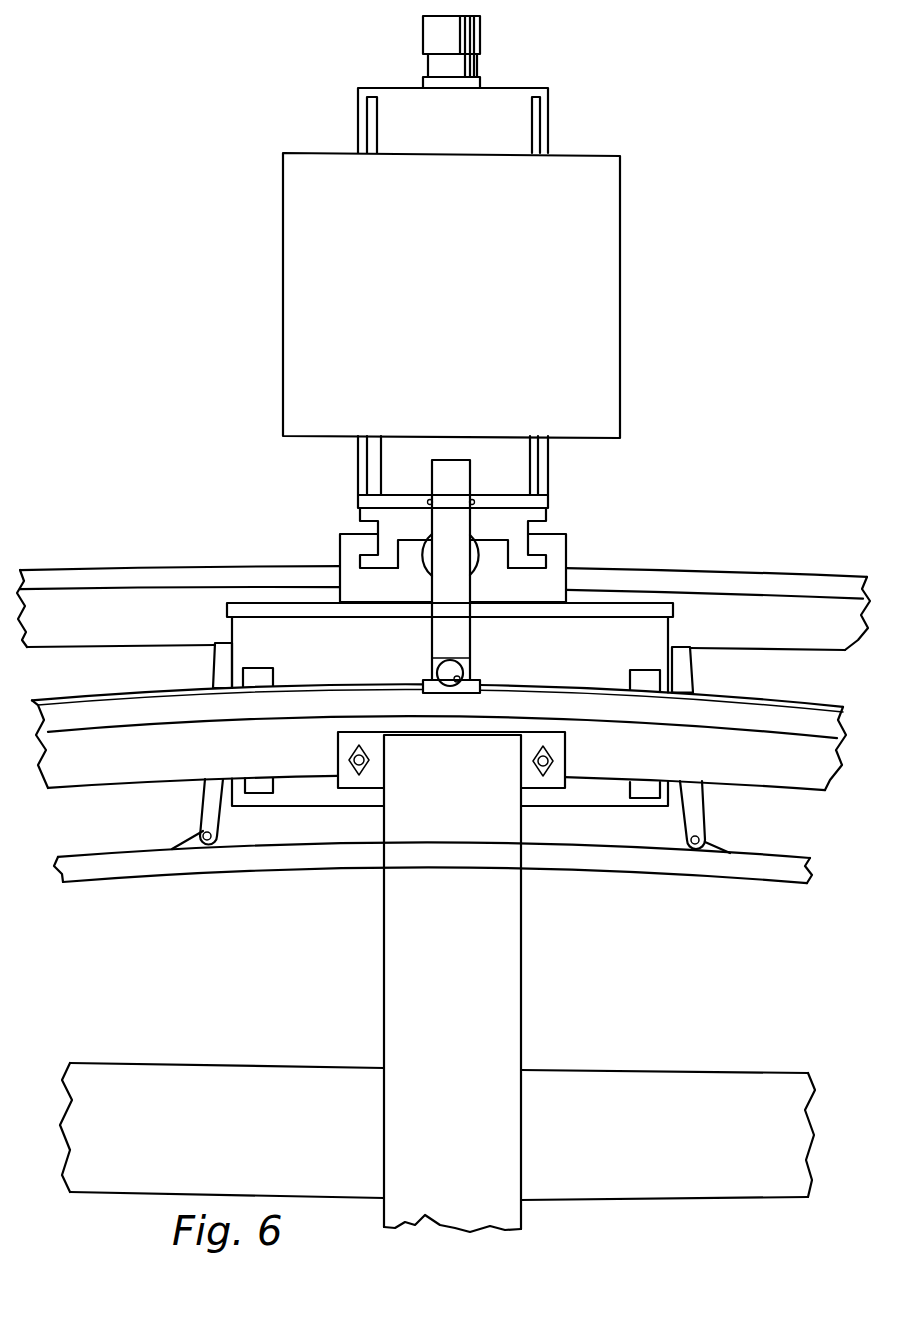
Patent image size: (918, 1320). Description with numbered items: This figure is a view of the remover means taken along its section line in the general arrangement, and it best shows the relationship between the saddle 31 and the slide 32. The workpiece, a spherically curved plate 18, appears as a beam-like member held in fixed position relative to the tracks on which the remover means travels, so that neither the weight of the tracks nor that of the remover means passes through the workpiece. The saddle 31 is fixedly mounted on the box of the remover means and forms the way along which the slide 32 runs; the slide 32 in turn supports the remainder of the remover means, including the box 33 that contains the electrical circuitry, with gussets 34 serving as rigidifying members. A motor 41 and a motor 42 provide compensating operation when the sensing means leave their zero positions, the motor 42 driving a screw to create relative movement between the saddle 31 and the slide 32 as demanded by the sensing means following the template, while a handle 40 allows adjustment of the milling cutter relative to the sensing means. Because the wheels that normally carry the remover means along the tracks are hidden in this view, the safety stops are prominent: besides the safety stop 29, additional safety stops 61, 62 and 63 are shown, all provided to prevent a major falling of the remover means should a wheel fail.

The spherically curved plate 18 is at (708, 570).
The safety stop 29 is at (274, 670).
The saddle 31 is at (340, 546).
The slide 32 is at (542, 517).
The box 33 is at (453, 278).
The gussets 34 is at (379, 130).
The handle 40 is at (461, 676).
The motor 41 is at (481, 36).
The motor 42 is at (474, 552).
The safety stop 61 is at (258, 793).
The safety stop 62 is at (632, 671).
The safety stop 63 is at (637, 798).